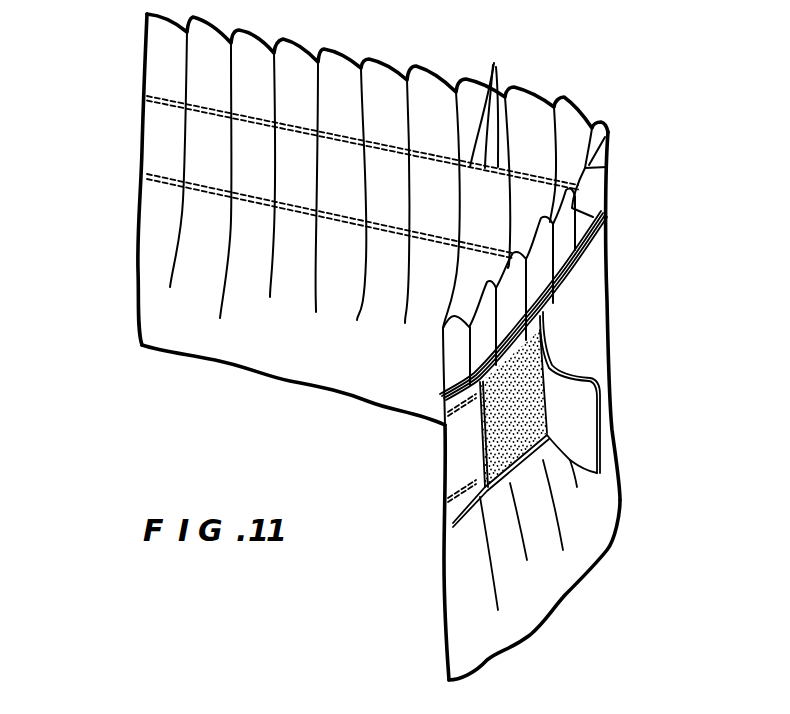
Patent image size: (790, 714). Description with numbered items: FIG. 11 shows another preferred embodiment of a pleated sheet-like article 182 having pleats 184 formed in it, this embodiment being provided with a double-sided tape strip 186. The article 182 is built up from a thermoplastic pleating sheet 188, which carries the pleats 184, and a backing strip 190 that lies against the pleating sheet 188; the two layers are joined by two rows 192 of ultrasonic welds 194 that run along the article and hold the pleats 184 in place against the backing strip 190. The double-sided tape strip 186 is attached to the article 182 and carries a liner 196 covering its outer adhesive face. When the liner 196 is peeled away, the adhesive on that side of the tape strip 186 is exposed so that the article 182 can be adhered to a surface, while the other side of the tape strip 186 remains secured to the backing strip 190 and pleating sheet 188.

The sheet-like article 182 is at (662, 110).
The pleats 184 is at (565, 232).
The double-sided tape strip 186 is at (588, 300).
The thermoplastic pleating sheet 188 is at (593, 525).
The backing strip 190 is at (450, 514).
The rows 192 is at (190, 165).
The ultrasonic welds 194 is at (496, 99).
The liner 196 is at (585, 417).